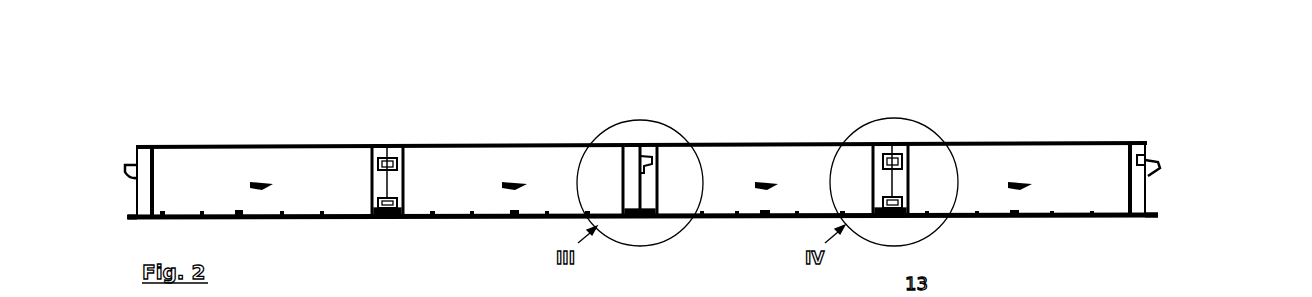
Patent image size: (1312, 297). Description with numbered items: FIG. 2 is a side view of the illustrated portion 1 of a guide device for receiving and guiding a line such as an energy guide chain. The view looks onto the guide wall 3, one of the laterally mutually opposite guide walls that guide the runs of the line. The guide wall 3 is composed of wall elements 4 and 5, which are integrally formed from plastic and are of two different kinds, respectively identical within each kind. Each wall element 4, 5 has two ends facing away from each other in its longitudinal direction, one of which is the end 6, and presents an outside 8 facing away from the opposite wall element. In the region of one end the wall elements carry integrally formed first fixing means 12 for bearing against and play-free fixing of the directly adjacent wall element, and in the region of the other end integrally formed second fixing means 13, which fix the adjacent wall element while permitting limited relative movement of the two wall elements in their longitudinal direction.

The portion 1 is at (1080, 131).
The guide wall 3 is at (1223, 173).
The wall element 4 is at (257, 137).
The wall element 5 is at (519, 136).
The end 6 is at (126, 188).
The outside 8 is at (607, 186).
The first fixing means 12 is at (390, 136).
The second fixing means 13 is at (114, 152).